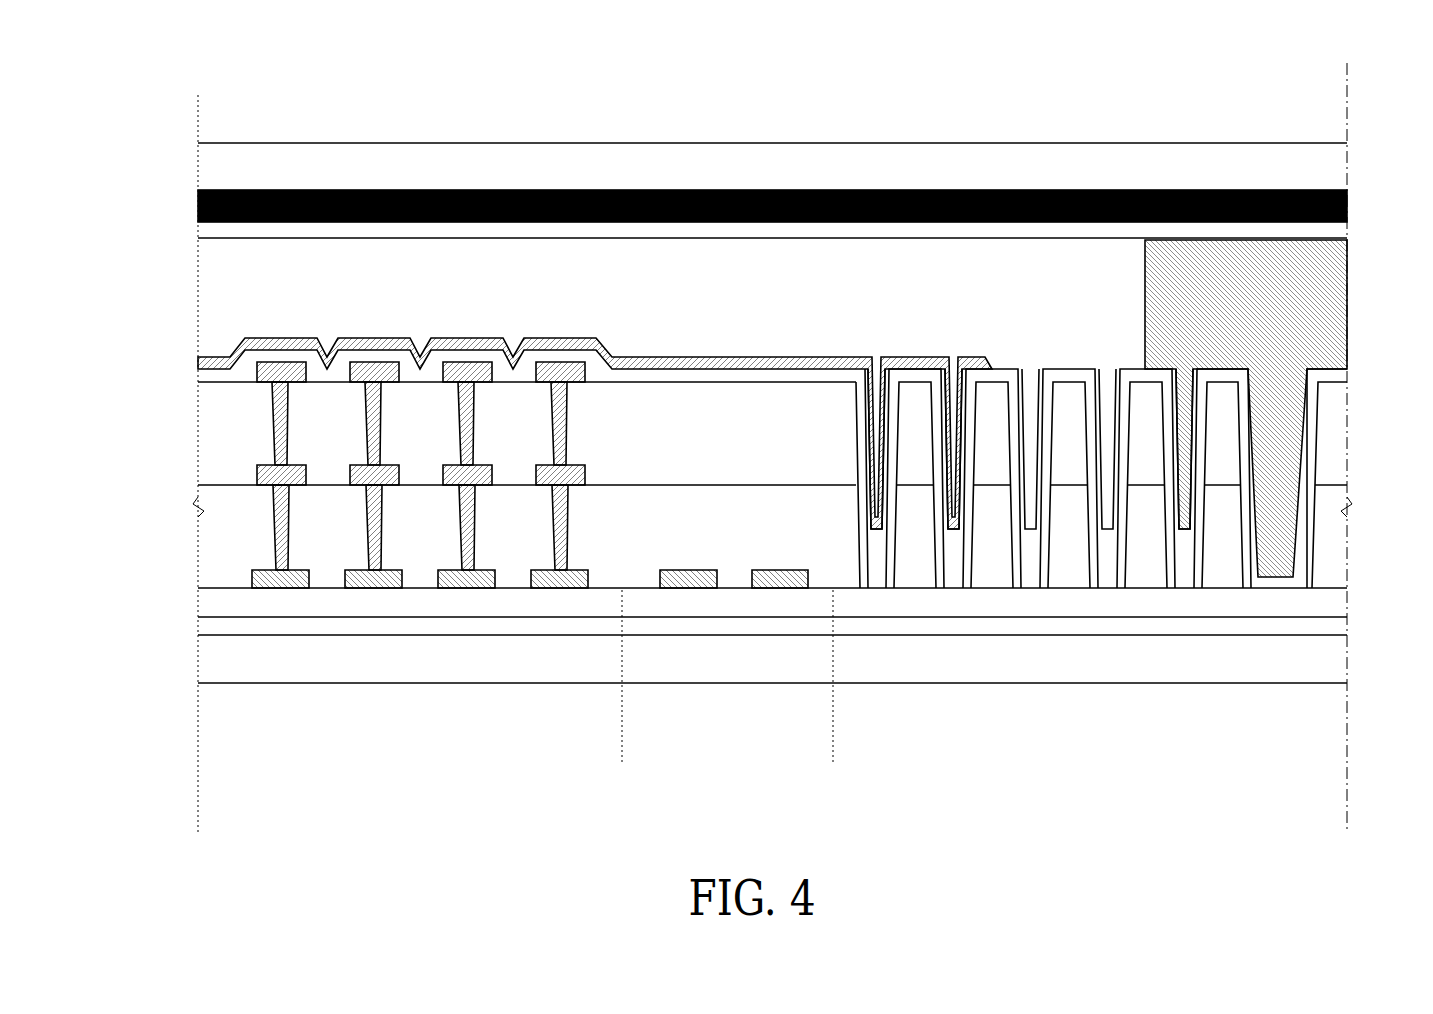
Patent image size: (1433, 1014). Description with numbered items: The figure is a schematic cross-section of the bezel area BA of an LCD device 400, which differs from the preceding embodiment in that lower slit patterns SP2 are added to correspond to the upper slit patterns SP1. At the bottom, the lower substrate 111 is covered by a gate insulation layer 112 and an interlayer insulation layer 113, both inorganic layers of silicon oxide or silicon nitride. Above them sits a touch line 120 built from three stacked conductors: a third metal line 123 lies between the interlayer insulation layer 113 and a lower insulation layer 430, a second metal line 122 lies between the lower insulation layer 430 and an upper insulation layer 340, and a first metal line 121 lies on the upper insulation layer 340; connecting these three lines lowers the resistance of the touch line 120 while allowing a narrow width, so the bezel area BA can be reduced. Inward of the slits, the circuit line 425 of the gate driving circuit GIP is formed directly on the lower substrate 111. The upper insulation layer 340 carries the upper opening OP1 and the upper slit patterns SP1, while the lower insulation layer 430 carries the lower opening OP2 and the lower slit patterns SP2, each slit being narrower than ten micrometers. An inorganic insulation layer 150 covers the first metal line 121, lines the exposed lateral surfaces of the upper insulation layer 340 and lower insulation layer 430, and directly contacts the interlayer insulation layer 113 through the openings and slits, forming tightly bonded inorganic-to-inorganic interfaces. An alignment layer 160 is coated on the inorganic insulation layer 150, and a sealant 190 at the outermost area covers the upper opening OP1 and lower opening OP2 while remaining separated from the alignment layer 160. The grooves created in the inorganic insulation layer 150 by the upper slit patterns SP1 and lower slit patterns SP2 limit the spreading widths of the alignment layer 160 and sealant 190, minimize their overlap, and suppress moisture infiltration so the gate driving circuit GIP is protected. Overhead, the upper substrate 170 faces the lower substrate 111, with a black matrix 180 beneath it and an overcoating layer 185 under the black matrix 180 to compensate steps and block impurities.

The LCD device 400 is at (1318, 42).
The upper substrate 170 is at (208, 165).
The black matrix 180 is at (200, 210).
The overcoating layer 185 is at (208, 237).
The sealant 190 is at (1312, 272).
The alignment layer 160 is at (213, 357).
The inorganic insulation layer 150 is at (212, 371).
The upper insulation layer 340 is at (622, 470).
The lower insulation layer 430 is at (607, 553).
The touch line 120 is at (335, 475).
The first metal line 121 is at (281, 433).
The second metal line 122 is at (282, 517).
The third metal line 123 is at (364, 570).
The interlayer insulation layer 113 is at (218, 601).
The gate insulation layer 112 is at (218, 626).
The lower substrate 111 is at (216, 661).
The circuit line 425 is at (783, 580).
The upper slit pattern SP1 is at (1185, 376).
The lower slit pattern SP2 is at (876, 557).
The upper opening OP1 is at (1266, 443).
The lower opening OP2 is at (1266, 541).
The gate driving circuit GIP is at (821, 752).
The bezel area BA is at (198, 792).